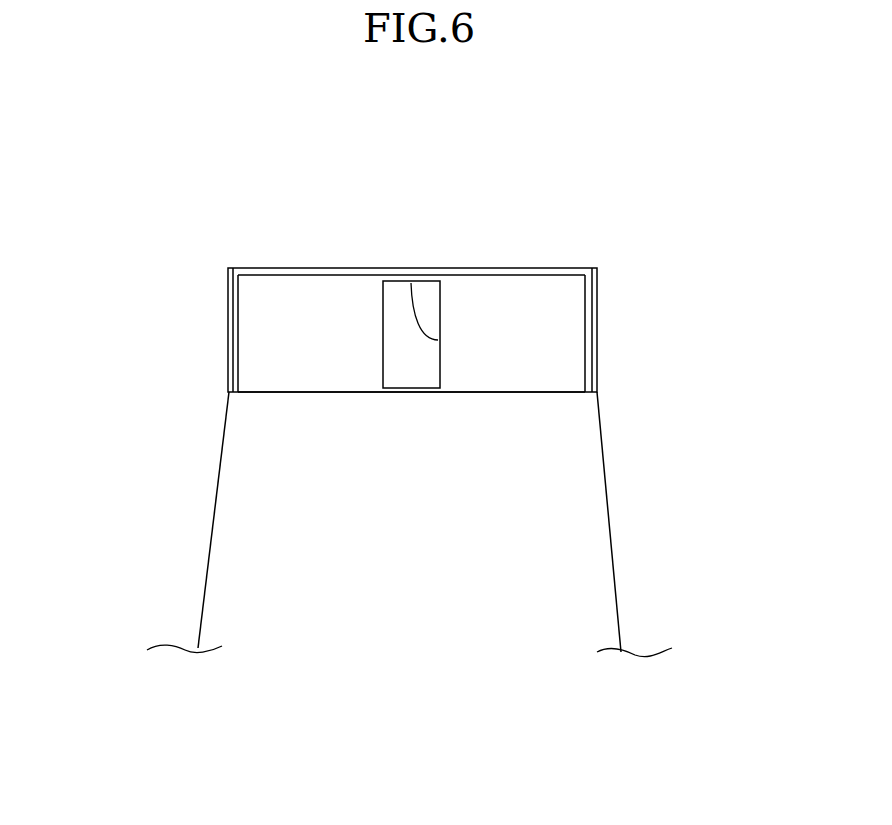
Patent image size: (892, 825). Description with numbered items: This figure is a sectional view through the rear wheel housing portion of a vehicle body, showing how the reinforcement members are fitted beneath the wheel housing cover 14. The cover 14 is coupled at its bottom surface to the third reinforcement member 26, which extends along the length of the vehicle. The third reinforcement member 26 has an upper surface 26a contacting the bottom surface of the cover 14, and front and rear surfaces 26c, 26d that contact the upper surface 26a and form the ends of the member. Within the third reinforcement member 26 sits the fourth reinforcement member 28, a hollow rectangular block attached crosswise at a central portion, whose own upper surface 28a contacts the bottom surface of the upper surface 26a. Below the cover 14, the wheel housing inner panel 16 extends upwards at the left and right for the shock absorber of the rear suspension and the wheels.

The wheel housing cover 14 is at (463, 268).
The wheel housing inner panel 16 is at (203, 530).
The third reinforcement member 26 is at (411, 466).
The upper surface 26a is at (338, 275).
The front surface 26c is at (225, 332).
The rear surface 26d is at (600, 333).
The fourth reinforcement member 28 is at (416, 397).
The upper surface 28a is at (445, 341).